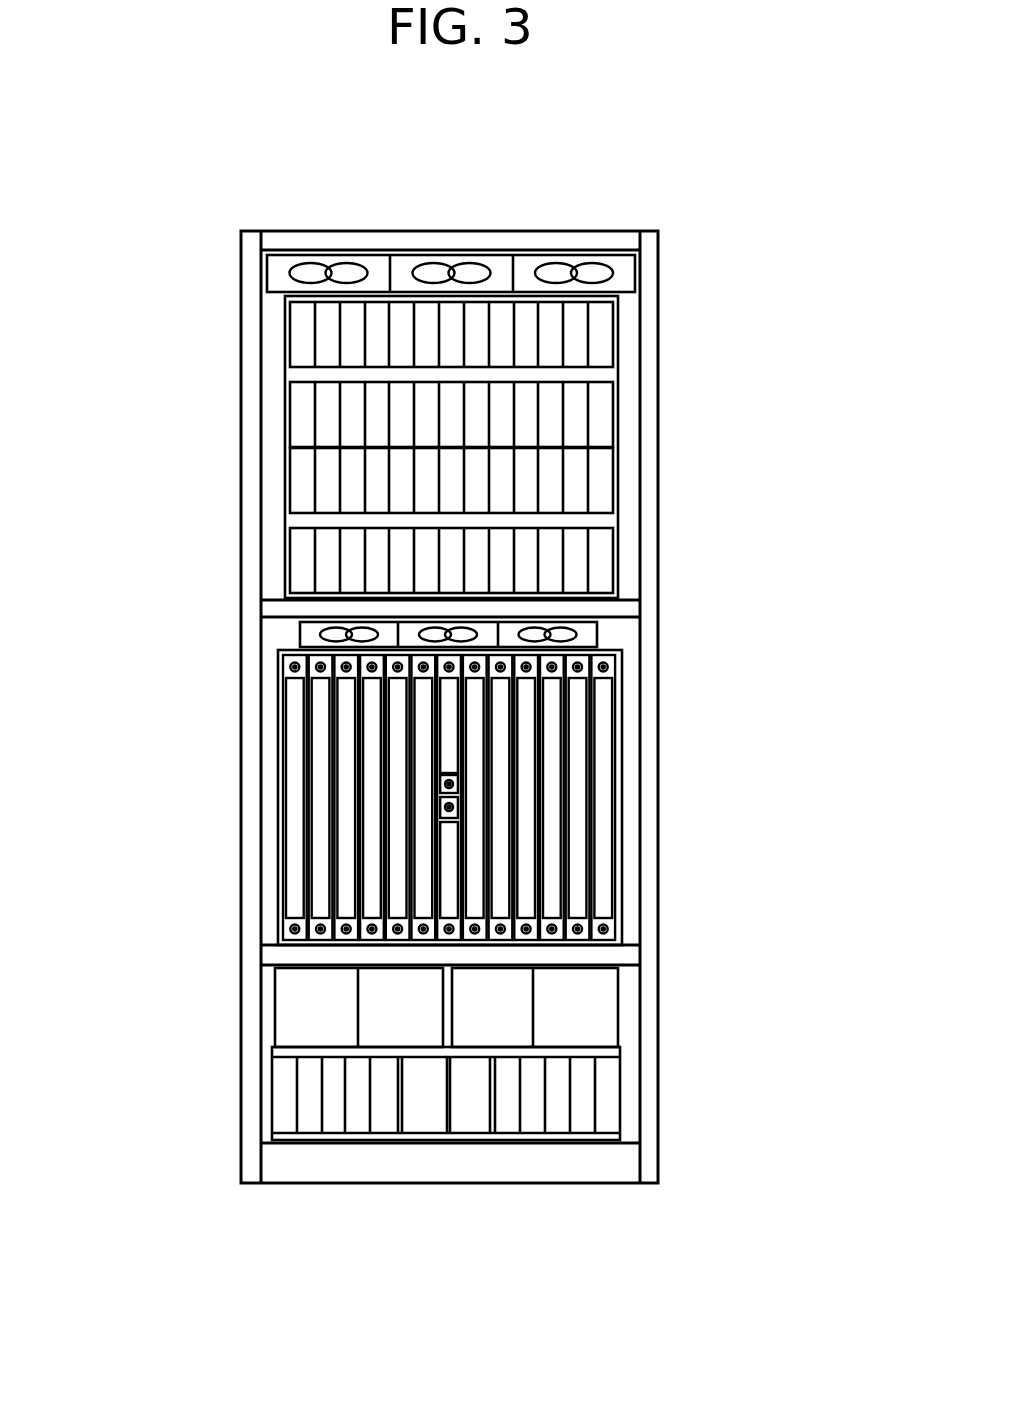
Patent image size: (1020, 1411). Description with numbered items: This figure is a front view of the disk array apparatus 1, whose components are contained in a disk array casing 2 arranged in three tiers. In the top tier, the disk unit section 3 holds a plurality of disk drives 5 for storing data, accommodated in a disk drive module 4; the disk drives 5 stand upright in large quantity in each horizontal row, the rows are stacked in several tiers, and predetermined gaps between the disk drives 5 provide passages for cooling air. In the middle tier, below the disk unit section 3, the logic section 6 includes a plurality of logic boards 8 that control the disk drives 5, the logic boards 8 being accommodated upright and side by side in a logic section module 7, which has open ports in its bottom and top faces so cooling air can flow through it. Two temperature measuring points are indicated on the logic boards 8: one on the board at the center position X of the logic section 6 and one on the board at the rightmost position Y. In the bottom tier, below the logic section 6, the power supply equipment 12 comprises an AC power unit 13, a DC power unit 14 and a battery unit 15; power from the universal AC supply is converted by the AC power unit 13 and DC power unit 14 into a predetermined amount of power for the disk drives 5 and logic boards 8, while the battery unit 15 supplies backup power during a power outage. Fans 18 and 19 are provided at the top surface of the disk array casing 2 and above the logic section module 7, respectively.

The disk array apparatus 1 is at (431, 690).
The disk array casing 2 is at (659, 670).
The disk unit section 3 is at (425, 421).
The disk drive module 4 is at (441, 447).
The disk drive 5 is at (350, 481).
The logic section 6 is at (431, 794).
The logic section module 7 is at (618, 815).
The logic board 8 is at (340, 810).
The power supply equipment 12 is at (414, 1098).
The AC power unit 13 is at (446, 1181).
The DC power unit 14 is at (310, 1007).
The battery unit 15 is at (557, 1122).
The fan 18 is at (453, 258).
The fan 19 is at (408, 633).
The center position of logic section X is at (258, 797).
The rightmost position of logic section Y is at (622, 797).